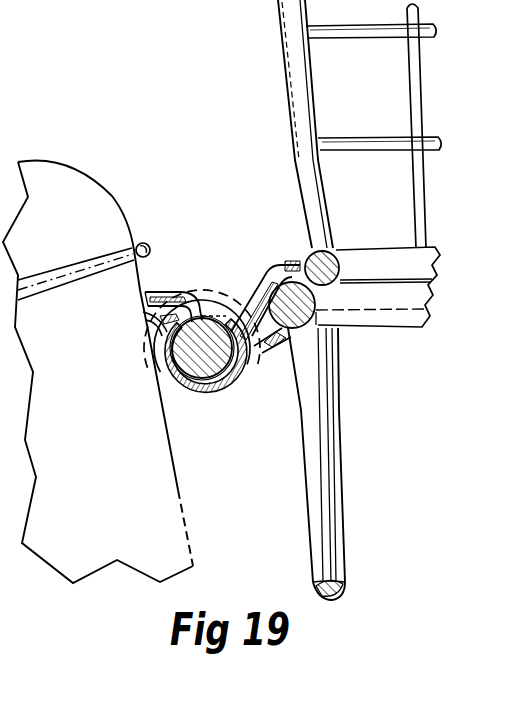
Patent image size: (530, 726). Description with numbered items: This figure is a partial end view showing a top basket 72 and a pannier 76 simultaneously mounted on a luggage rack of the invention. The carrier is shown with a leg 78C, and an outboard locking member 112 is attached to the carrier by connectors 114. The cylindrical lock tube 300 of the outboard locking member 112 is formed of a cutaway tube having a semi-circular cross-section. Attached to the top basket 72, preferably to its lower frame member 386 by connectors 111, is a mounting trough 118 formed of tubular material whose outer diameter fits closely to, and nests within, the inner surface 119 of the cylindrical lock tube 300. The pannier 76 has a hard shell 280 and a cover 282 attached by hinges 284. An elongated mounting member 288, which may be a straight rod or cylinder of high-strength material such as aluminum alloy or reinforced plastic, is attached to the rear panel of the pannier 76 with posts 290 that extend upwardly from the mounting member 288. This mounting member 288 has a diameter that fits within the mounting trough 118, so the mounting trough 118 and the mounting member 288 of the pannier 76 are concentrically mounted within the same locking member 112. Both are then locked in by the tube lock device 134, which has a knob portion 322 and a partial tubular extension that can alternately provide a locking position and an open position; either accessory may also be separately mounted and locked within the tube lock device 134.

The top basket 72 is at (278, 66).
The pannier 76 is at (45, 155).
The leg 78C is at (332, 566).
The connectors 111 is at (299, 260).
The outboard locking member 112 is at (199, 402).
The connectors 114 is at (249, 372).
The mounting trough 118 is at (166, 330).
The inner surface 119 is at (230, 300).
The tube lock device 134 is at (231, 408).
The hard shell 280 is at (193, 546).
The cover 282 is at (74, 167).
The hinges 284 is at (145, 243).
The mounting member 288 is at (158, 328).
The posts 290 is at (163, 290).
The lock tube 300 is at (158, 358).
The knob portion 322 is at (250, 290).
The lower frame member 386 is at (377, 254).